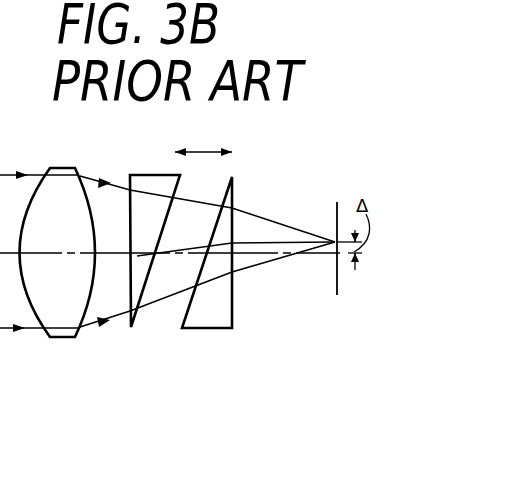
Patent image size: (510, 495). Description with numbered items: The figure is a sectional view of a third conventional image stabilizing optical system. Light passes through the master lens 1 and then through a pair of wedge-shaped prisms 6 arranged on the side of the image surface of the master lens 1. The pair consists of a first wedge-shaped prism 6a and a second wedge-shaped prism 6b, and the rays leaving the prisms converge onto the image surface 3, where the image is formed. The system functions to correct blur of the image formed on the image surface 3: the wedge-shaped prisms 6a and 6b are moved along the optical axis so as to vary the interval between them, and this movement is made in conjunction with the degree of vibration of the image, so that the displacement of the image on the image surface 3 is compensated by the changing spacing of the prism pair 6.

The master lens 1 is at (57, 165).
The image surface 3 is at (334, 282).
The wedge-shaped prisms 6 is at (189, 284).
The wedge-shaped prism 6a is at (138, 282).
The wedge-shaped prism 6b is at (210, 280).